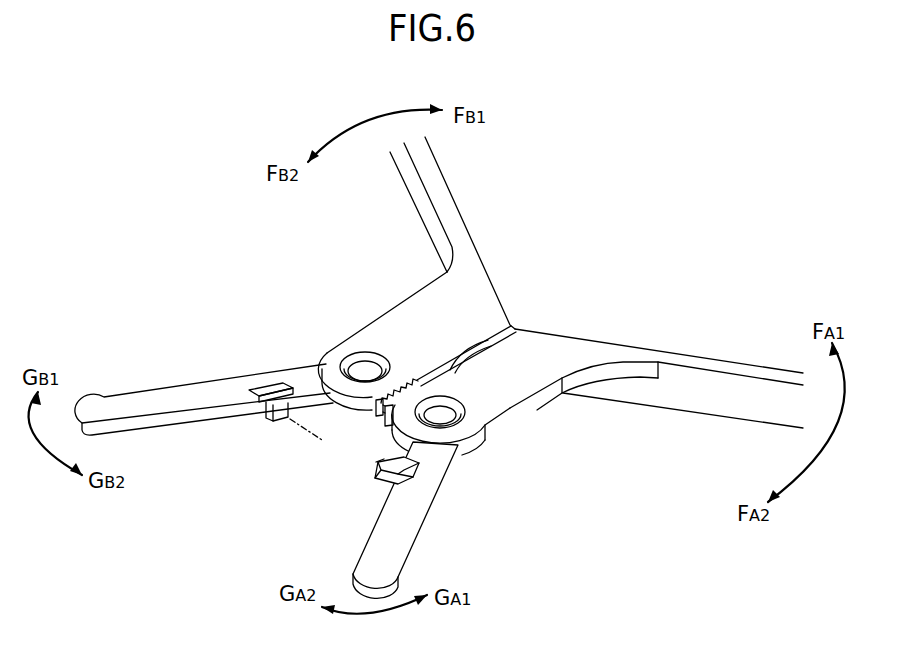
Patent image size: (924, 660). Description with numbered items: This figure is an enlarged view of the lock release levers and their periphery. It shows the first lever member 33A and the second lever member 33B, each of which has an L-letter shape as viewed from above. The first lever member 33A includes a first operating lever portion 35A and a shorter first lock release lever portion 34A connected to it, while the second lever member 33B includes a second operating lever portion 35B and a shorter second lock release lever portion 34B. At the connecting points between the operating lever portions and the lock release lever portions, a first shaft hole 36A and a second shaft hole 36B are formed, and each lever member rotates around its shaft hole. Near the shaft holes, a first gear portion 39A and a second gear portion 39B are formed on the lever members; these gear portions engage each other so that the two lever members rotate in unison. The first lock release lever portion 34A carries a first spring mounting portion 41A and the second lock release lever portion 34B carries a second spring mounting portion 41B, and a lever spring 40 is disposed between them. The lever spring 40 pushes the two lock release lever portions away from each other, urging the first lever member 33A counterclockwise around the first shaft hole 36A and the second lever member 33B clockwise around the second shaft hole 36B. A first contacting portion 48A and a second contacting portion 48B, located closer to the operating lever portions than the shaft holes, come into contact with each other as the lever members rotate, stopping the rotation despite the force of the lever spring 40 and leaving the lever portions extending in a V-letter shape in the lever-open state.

The first lever member 33A is at (658, 348).
The second lever member 33B is at (472, 225).
The first lock release lever portion 34A is at (413, 527).
The second lock release lever portion 34B is at (175, 402).
The first operating lever portion 35A is at (715, 398).
The second operating lever portion 35B is at (413, 177).
The first shaft hole 36A is at (462, 408).
The second shaft hole 36B is at (366, 370).
The first gear portion 39A is at (377, 462).
The second gear portion 39B is at (325, 438).
The lever spring 40 is at (380, 424).
The first spring mounting portion 41A is at (372, 477).
The second spring mounting portion 41B is at (262, 403).
The first contacting portion 48A is at (473, 348).
The second contacting portion 48B is at (487, 338).